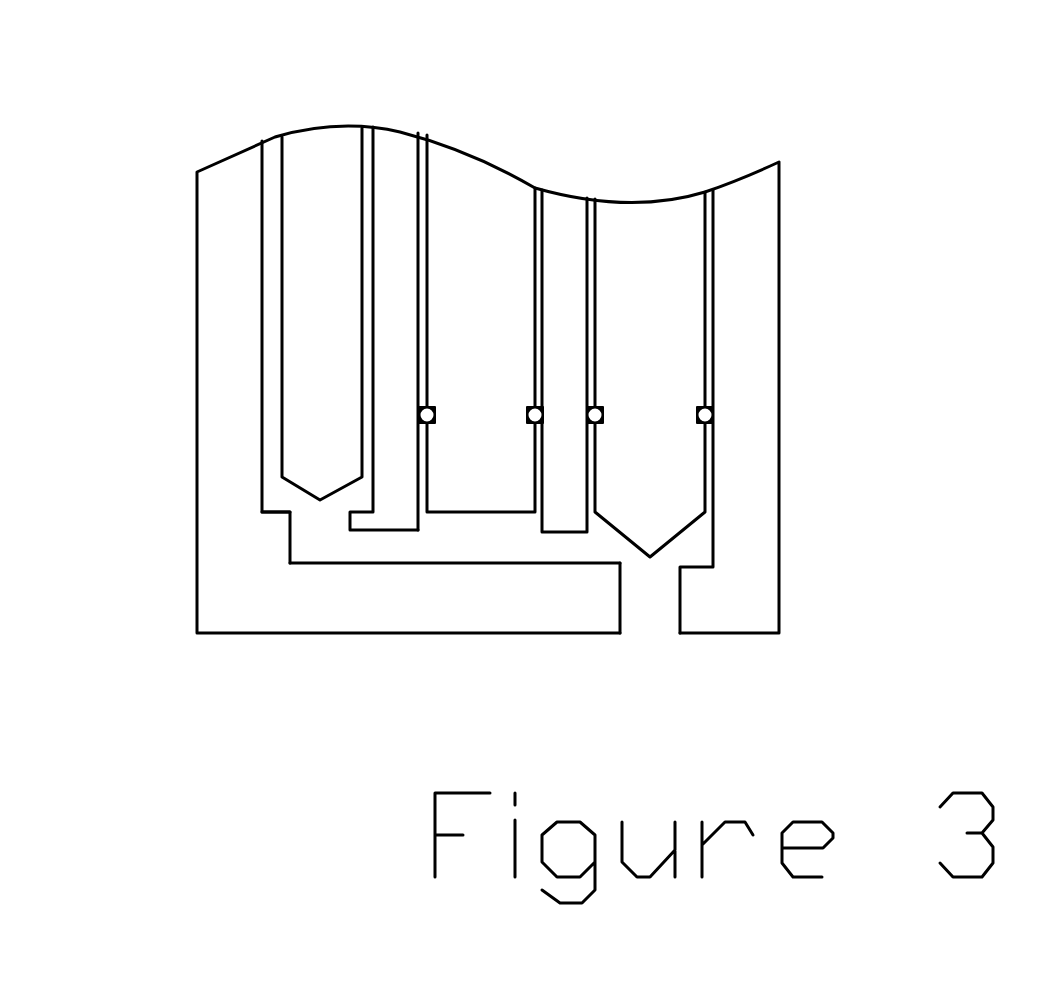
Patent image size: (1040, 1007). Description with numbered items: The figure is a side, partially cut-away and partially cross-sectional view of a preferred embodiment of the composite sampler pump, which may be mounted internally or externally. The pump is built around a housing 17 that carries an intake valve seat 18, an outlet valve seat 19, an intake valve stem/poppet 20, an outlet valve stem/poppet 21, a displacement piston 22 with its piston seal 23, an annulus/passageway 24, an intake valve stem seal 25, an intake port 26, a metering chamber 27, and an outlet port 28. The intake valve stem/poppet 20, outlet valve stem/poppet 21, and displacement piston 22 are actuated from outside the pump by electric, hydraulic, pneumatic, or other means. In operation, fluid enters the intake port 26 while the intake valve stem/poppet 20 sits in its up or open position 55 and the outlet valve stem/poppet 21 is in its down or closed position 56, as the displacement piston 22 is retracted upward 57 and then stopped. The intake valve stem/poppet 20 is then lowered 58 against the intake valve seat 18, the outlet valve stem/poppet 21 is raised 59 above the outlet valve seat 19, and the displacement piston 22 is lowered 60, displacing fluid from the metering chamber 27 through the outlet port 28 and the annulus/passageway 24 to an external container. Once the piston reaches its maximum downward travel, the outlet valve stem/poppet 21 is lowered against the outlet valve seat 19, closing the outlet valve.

The housing 17 is at (750, 298).
The intake valve seat 18 is at (695, 565).
The outlet valve seat 19 is at (280, 512).
The intake valve stem/poppet 20 is at (682, 478).
The outlet valve stem/poppet 21 is at (302, 378).
The displacement piston 22 is at (480, 211).
The piston seal 23 is at (432, 427).
The annulus/passageway 24 is at (275, 145).
The intake valve stem seal 25 is at (712, 410).
The intake port 26 is at (643, 608).
The metering chamber 27 is at (505, 520).
The outlet port 28 is at (330, 522).
The open position 55 is at (650, 303).
The down position 56 is at (308, 398).
The upward retraction 57 is at (477, 280).
The lowered position 58 is at (652, 486).
The raised position 59 is at (308, 223).
The lowered position 60 is at (462, 397).